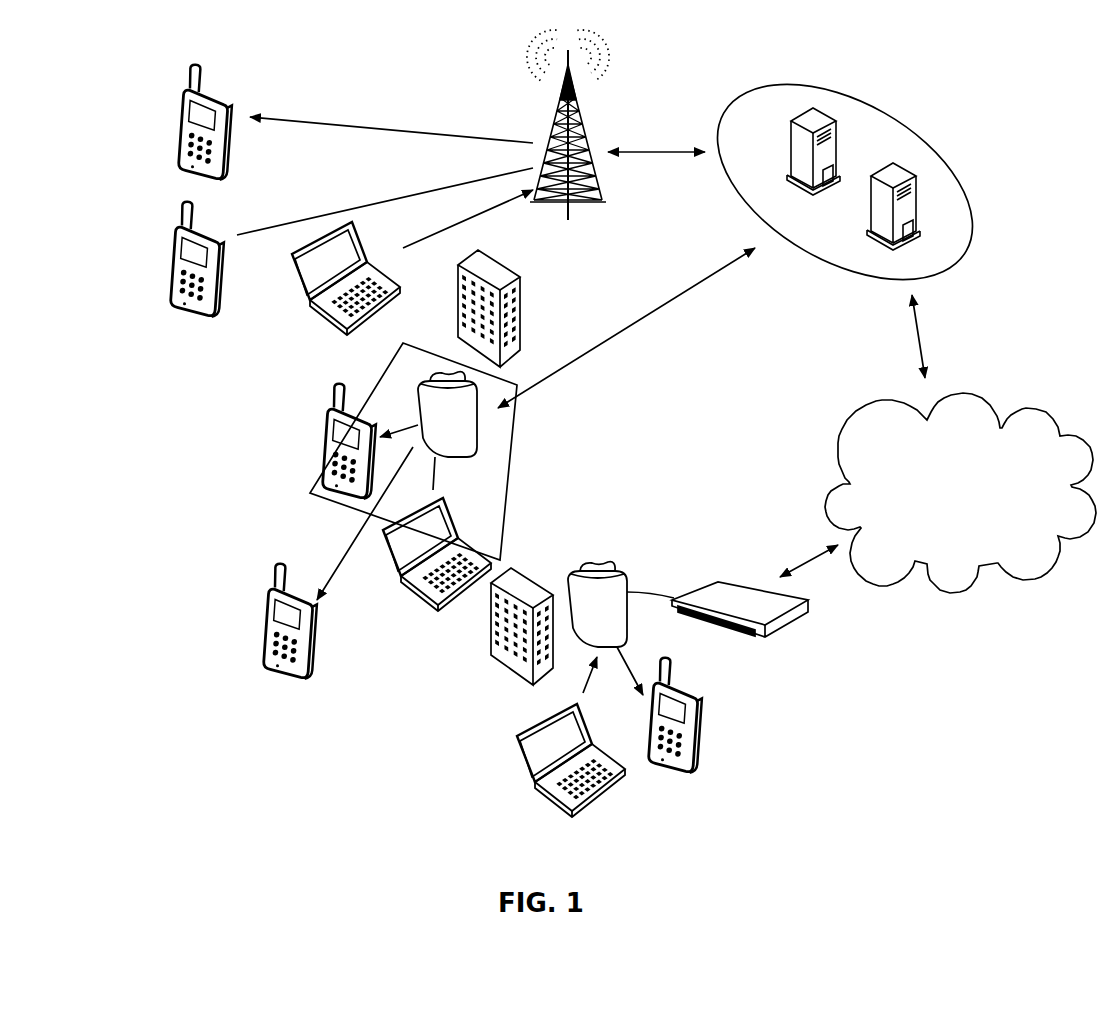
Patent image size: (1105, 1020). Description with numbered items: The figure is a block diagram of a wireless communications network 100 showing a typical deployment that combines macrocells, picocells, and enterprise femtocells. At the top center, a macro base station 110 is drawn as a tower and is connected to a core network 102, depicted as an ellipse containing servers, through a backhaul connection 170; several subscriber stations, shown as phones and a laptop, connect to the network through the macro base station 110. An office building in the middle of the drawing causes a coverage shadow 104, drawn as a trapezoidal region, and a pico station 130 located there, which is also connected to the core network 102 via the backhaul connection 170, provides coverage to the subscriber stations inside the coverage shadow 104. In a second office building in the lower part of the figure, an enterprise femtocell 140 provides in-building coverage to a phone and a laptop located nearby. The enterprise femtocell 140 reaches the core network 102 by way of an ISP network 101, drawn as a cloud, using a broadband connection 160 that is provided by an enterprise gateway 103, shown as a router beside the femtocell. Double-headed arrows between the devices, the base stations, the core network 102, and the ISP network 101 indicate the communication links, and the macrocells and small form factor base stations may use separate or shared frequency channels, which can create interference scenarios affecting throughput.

The communications network 100 is at (972, 80).
The ISP network 101 is at (838, 455).
The core network 102 is at (940, 160).
The enterprise gateway 103 is at (795, 618).
The coverage shadow 104 is at (512, 472).
The macro base station 110 is at (587, 150).
The pico station 130 is at (418, 392).
The enterprise femtocell 140 is at (625, 590).
The broadband connection 160 is at (825, 555).
The backhaul connection 170 is at (682, 292).